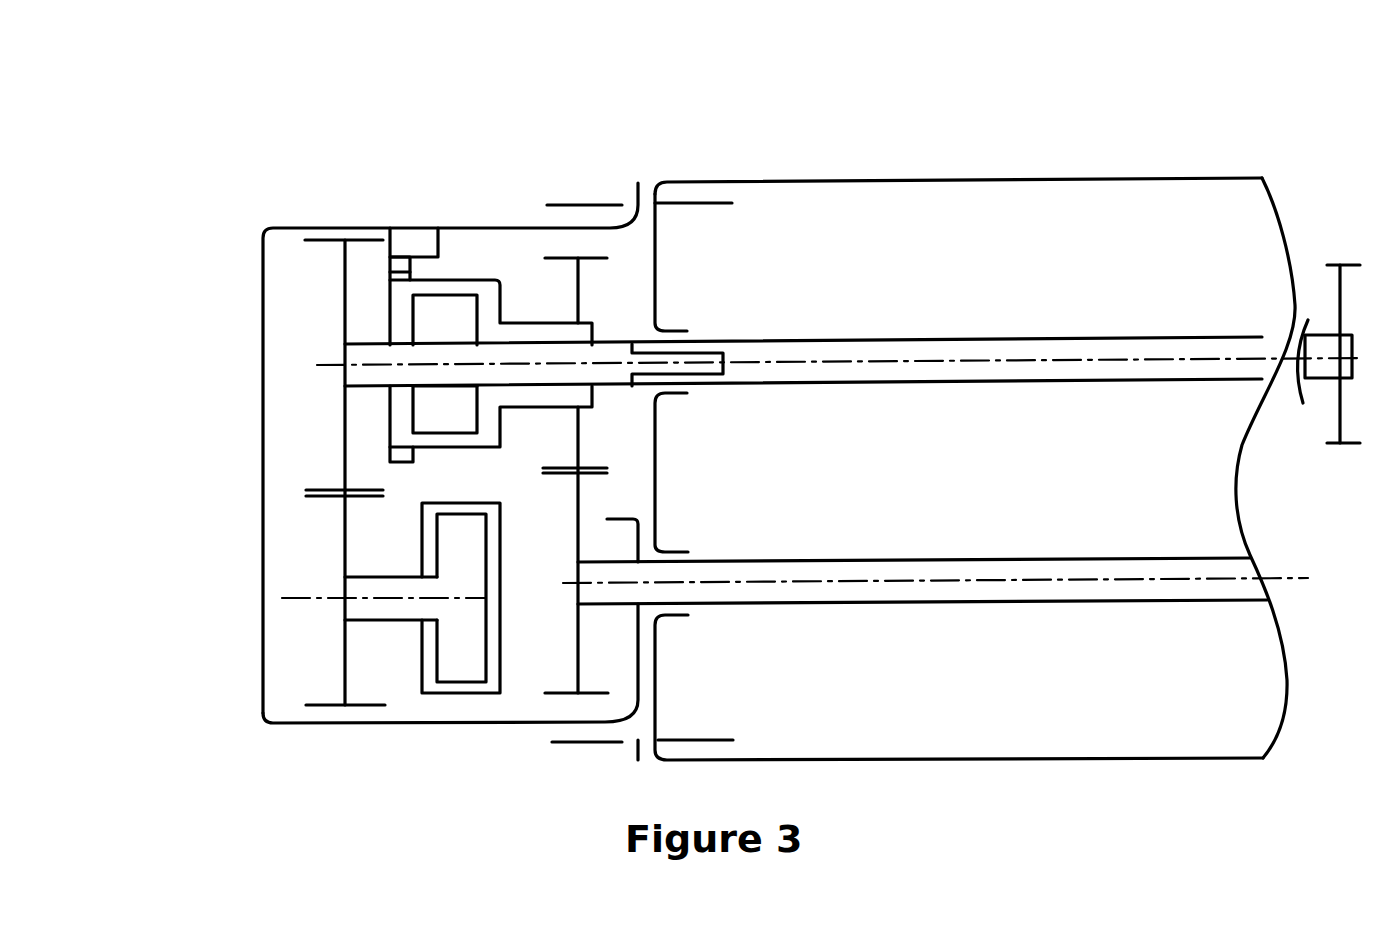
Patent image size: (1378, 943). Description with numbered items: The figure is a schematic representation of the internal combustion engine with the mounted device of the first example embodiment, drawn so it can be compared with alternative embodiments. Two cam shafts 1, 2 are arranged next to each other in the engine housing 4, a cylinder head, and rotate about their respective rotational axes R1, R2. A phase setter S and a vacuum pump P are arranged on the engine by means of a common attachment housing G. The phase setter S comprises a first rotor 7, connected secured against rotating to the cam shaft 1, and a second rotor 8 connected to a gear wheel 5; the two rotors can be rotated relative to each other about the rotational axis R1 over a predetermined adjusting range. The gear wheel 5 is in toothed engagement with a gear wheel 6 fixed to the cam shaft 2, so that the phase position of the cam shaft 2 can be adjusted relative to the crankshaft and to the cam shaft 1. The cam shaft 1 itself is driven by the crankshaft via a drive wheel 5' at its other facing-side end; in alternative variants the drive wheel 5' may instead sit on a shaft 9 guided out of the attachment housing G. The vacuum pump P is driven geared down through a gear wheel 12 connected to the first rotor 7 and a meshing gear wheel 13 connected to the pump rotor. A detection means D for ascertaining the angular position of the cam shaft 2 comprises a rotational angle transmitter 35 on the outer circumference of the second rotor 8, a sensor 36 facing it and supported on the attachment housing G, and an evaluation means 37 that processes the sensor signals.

The cam shaft 1 is at (963, 343).
The cam shaft 2 is at (1008, 597).
The engine housing 4 is at (830, 180).
The gear wheel 5 is at (572, 219).
The drive wheel 5' is at (1329, 277).
The gear wheel 6 is at (578, 658).
The first rotor 7 is at (453, 308).
The second rotor 8 is at (485, 287).
The shaft 9 is at (440, 373).
The gear wheel 12 is at (345, 280).
The gear wheel 13 is at (345, 533).
The rotational angle transmitter 35 is at (400, 272).
The sensor 36 is at (400, 258).
The evaluation means 37 is at (422, 240).
The attachment housing G is at (267, 476).
The phase setter S is at (375, 407).
The vacuum pump P is at (398, 646).
The detection means D is at (395, 72).
The rotational axis R1 is at (1087, 360).
The rotational axis R2 is at (1064, 577).